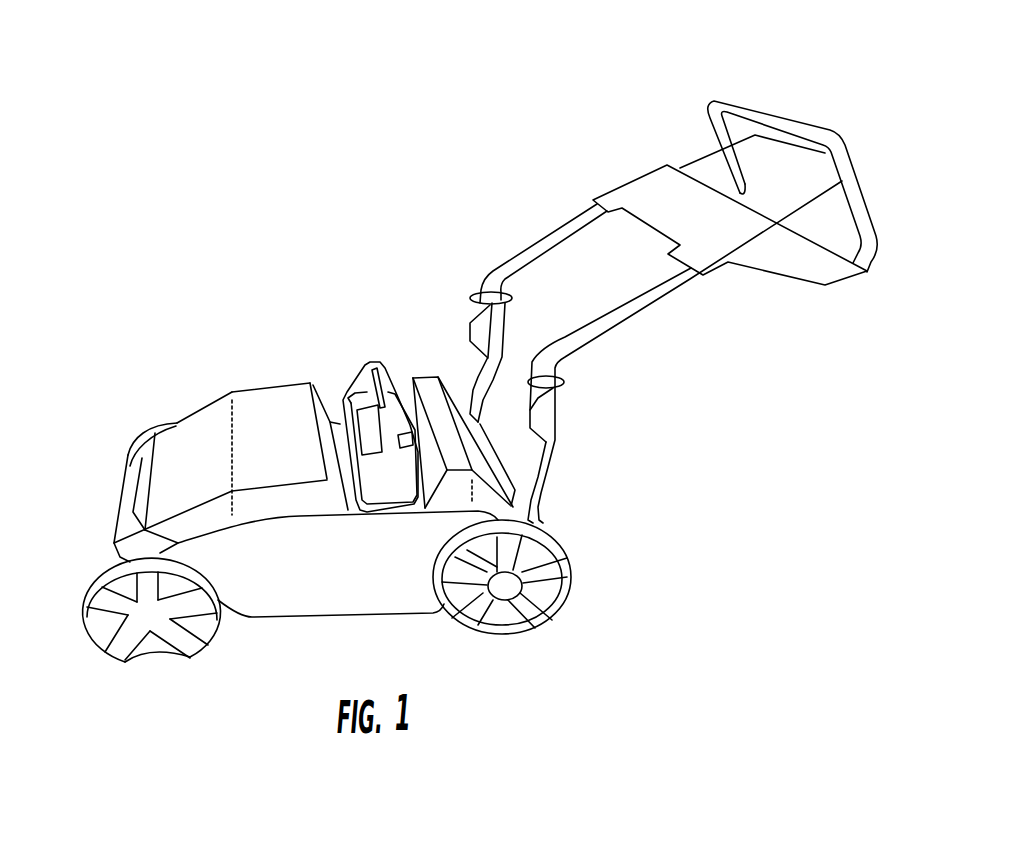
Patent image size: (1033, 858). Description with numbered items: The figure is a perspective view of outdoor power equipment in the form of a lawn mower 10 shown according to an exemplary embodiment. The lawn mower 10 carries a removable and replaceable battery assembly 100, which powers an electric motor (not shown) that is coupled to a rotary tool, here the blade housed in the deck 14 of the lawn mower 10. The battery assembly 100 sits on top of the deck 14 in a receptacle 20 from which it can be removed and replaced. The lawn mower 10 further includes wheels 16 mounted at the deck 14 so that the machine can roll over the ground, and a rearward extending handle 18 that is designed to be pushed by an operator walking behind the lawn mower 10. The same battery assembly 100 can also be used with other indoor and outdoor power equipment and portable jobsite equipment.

The lawn mower 10 is at (173, 96).
The deck 14 is at (128, 503).
The wheels 16 is at (140, 437).
The handle 18 is at (813, 124).
The battery receptacle 20 is at (345, 438).
The battery assembly 100 is at (398, 345).